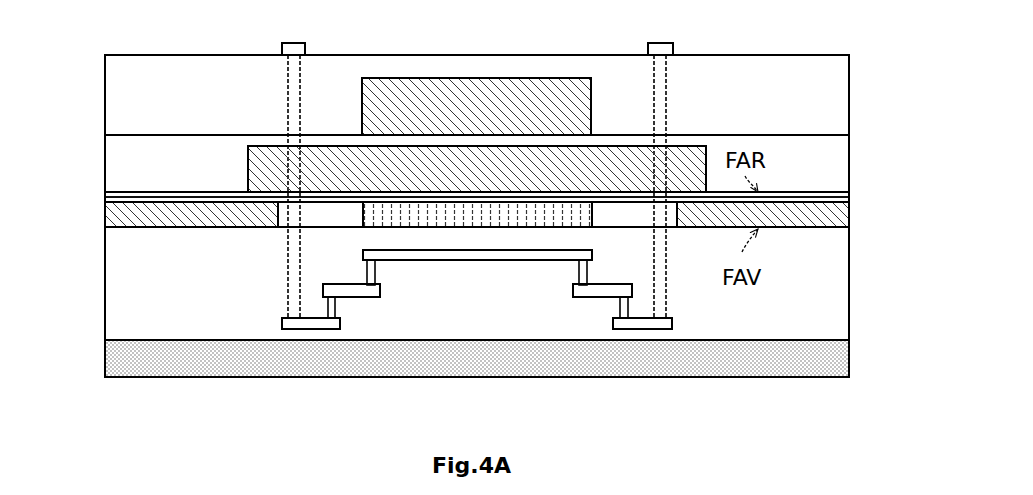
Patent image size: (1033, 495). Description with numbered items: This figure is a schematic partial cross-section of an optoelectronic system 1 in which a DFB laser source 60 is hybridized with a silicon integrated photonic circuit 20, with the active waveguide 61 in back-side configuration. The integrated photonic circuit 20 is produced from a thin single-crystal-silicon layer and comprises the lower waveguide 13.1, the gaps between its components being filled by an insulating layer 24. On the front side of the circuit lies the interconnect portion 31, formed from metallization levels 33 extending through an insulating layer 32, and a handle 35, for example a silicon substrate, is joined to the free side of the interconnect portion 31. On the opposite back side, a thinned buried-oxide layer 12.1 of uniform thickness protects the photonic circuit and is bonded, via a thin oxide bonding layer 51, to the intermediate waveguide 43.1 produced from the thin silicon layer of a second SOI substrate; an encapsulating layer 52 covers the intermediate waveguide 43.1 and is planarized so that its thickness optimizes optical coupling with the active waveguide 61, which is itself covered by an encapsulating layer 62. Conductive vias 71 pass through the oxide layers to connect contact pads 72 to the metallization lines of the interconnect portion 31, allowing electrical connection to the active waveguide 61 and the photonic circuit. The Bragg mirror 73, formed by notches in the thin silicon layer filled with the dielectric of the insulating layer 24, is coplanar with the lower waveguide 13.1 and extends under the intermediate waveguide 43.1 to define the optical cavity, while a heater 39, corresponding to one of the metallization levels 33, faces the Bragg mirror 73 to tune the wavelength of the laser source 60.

The optoelectronic system 1 is at (76, 46).
The laser source 60 is at (94, 94).
The encapsulating layer 62 is at (854, 95).
The active waveguide 61 is at (477, 76).
The contact pads 72 is at (281, 50).
The conductive vias 71 is at (286, 113).
The encapsulating layer 52 is at (854, 164).
The thin oxide bonding layer 51 is at (854, 195).
The intermediate waveguide 43.1 is at (246, 170).
The thinned buried-oxide layer 12.1 is at (854, 203).
The integrated photonic circuit 20 is at (94, 214).
The lower waveguide 13.1 is at (192, 229).
The insulating layer 24 is at (322, 218).
The Bragg mirror 73 is at (596, 216).
The interconnect portion 31 is at (94, 276).
The insulating layer 32 is at (854, 284).
The handle 35 is at (854, 357).
The heater 39 is at (466, 264).
The metallization levels 33 is at (352, 300).